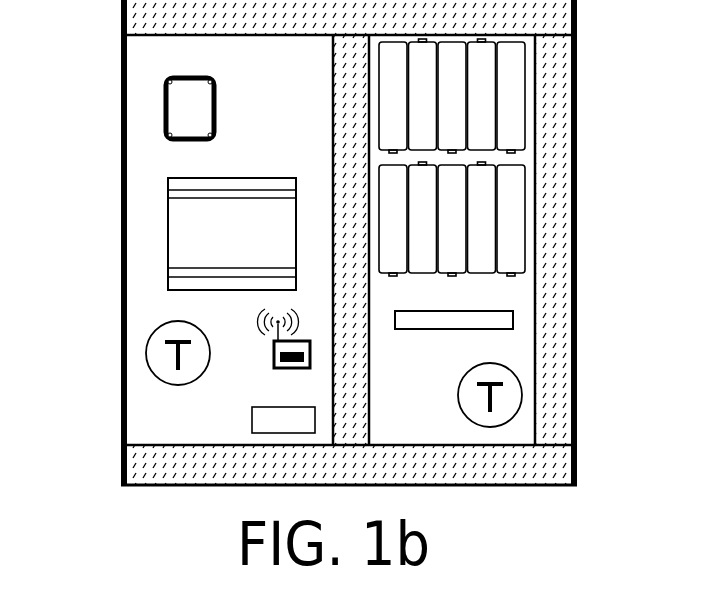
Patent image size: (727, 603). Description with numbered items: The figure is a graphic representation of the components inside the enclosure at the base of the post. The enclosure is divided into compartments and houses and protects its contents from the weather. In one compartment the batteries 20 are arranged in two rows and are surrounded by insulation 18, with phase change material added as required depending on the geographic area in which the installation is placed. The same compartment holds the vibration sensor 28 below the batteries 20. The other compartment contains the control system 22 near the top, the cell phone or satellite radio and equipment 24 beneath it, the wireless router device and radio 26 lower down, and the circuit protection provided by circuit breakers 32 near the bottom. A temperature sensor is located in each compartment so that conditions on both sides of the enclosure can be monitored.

The insulation 18 is at (558, 228).
The batteries 20 is at (515, 100).
The control system 22 is at (183, 110).
The cell phone or satellite radio and equipment 24 is at (183, 227).
The wireless router device and radio 26 is at (270, 363).
The vibration sensor 28 is at (492, 315).
The circuit breakers 32 is at (257, 417).